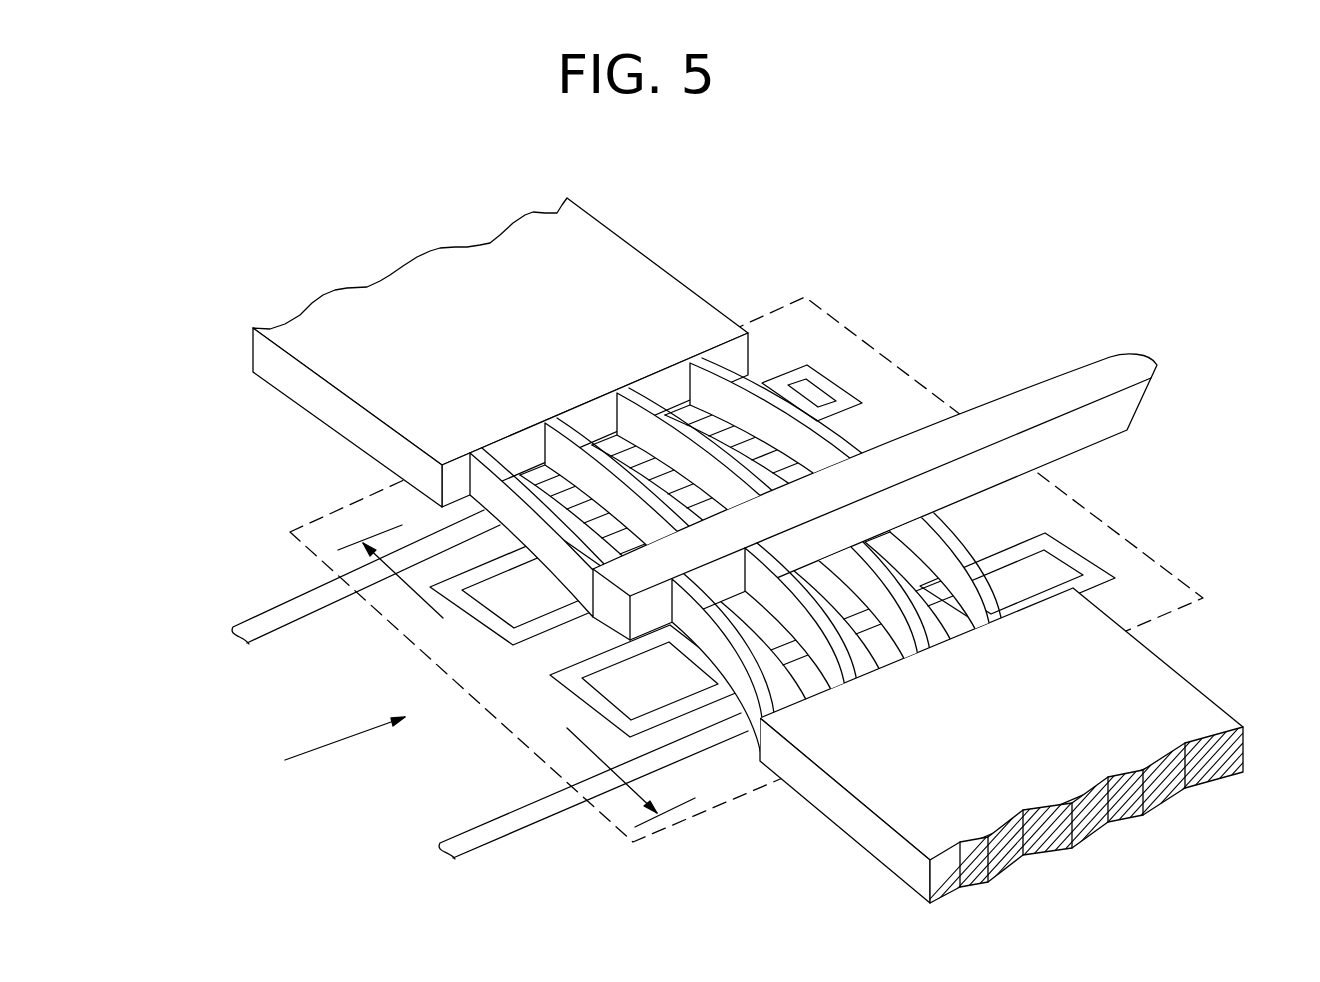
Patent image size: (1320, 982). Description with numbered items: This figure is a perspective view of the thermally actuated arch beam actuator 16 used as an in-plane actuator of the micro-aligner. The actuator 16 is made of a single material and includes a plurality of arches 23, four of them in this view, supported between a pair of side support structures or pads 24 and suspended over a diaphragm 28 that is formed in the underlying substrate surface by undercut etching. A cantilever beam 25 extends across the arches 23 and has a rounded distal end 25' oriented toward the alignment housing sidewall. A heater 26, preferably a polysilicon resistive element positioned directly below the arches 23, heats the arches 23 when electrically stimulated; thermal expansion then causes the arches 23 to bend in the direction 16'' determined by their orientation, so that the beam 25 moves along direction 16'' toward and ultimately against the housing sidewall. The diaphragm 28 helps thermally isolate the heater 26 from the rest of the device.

The thermally actuated arch beam actuator 16 is at (945, 233).
The direction of actuation 16'' is at (490, 684).
The arches 23 is at (752, 385).
The side support structures or pads 24 is at (317, 388).
The cantilever beam 25 is at (569, 628).
The rounded distal end 25' is at (904, 469).
The heater 26 is at (1077, 540).
The diaphragm 28 is at (913, 370).